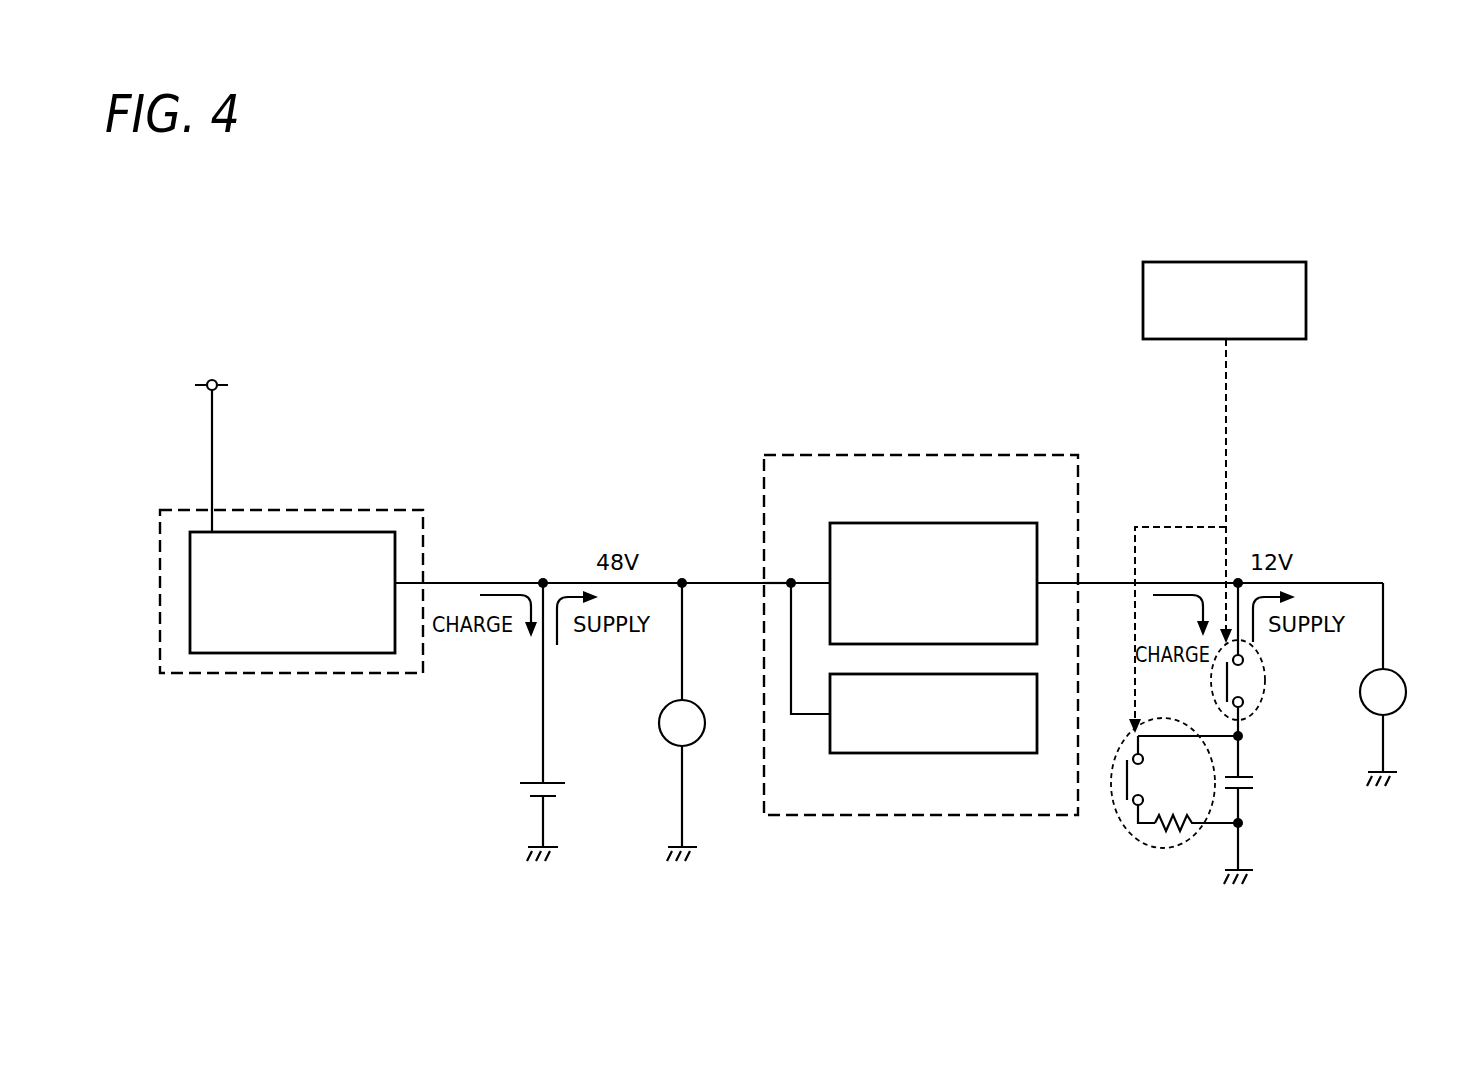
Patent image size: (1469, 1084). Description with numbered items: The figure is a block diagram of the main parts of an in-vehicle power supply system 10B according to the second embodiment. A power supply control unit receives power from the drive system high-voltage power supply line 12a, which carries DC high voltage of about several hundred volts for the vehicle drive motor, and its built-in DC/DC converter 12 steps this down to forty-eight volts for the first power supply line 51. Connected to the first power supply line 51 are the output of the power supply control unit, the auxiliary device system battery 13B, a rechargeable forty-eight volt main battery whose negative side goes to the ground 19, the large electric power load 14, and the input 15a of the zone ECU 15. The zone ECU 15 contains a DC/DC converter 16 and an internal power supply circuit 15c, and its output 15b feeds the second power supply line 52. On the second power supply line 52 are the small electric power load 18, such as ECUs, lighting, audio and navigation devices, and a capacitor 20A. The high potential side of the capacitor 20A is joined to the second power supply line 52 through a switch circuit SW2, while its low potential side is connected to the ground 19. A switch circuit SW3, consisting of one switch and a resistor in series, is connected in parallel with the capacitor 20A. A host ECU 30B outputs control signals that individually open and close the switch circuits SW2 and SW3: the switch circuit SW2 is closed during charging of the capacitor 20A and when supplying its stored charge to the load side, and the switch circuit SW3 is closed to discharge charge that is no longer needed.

The in-vehicle power supply system 10B is at (727, 354).
The DC/DC converter 12 is at (227, 653).
The drive system high-voltage power supply line 12a is at (226, 386).
The auxiliary device system battery 13B is at (552, 777).
The large electric power load 14 is at (705, 730).
The zone ECU 15 is at (855, 455).
The input 15a is at (764, 583).
The output 15b is at (1078, 583).
The internal power supply circuit 15c is at (865, 753).
The DC/DC converter 16 is at (1013, 523).
The small electric power load 18 is at (1407, 683).
The ground 19 is at (682, 822).
The capacitor 20A is at (1255, 778).
The host ECU 30B is at (1143, 292).
The first power supply line 51 is at (705, 580).
The second power supply line 52 is at (1322, 583).
The switch circuit SW2 is at (1262, 700).
The switch circuit SW3 is at (1135, 840).